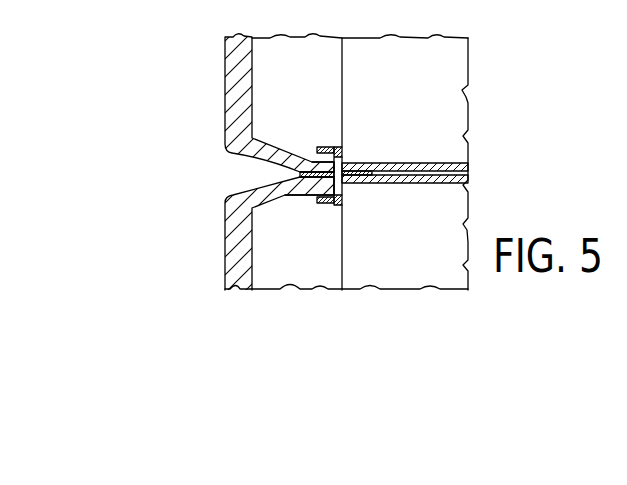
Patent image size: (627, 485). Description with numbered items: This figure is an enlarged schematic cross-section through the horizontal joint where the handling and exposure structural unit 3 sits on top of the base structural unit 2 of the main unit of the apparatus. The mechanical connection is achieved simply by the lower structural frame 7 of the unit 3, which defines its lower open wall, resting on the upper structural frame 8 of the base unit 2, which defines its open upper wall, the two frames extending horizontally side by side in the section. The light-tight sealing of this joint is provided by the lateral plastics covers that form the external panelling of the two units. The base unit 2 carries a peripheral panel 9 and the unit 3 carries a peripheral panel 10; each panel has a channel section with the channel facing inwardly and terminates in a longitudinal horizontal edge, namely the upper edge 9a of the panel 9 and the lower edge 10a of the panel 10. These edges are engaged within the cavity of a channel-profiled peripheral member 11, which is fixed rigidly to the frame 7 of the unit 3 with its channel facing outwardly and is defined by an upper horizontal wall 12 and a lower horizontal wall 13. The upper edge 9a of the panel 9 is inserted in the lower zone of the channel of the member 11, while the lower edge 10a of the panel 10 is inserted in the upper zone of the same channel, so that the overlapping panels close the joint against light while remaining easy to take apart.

The base structural unit 2 is at (212, 226).
The handling and exposure structural unit 3 is at (214, 76).
The lower structural frame 7 is at (408, 163).
The upper structural frame 8 is at (407, 183).
The peripheral panel 9 is at (228, 268).
The upper edge 9a is at (318, 196).
The peripheral panel 10 is at (230, 118).
The lower edge 10a is at (314, 154).
The channel-profiled peripheral member 11 is at (351, 142).
The upper horizontal wall 12 is at (341, 152).
The lower horizontal wall 13 is at (335, 204).